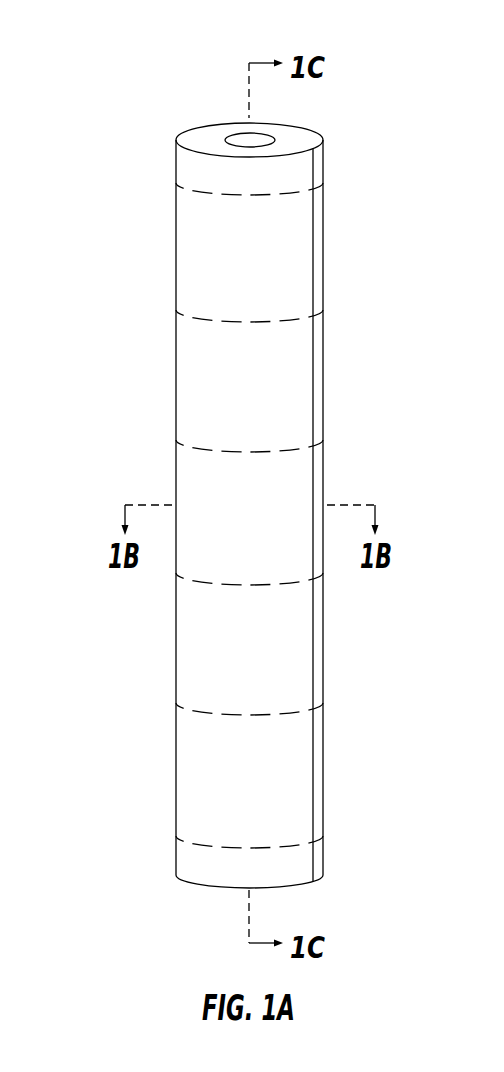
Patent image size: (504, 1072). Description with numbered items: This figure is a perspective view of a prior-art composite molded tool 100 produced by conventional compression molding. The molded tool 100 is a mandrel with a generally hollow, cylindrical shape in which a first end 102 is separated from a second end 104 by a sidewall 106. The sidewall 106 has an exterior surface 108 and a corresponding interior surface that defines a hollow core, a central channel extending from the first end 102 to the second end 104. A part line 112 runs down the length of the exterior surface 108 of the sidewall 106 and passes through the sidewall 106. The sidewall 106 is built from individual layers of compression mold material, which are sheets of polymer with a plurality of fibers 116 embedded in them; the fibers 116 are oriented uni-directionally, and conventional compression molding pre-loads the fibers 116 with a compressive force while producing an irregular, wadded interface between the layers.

The composite molded tool 100 is at (226, 472).
The first end 102 is at (183, 120).
The second end 104 is at (181, 896).
The sidewall 106 is at (160, 272).
The exterior surface 108 is at (193, 388).
The part line 112 is at (315, 793).
The fibers 116 is at (291, 190).